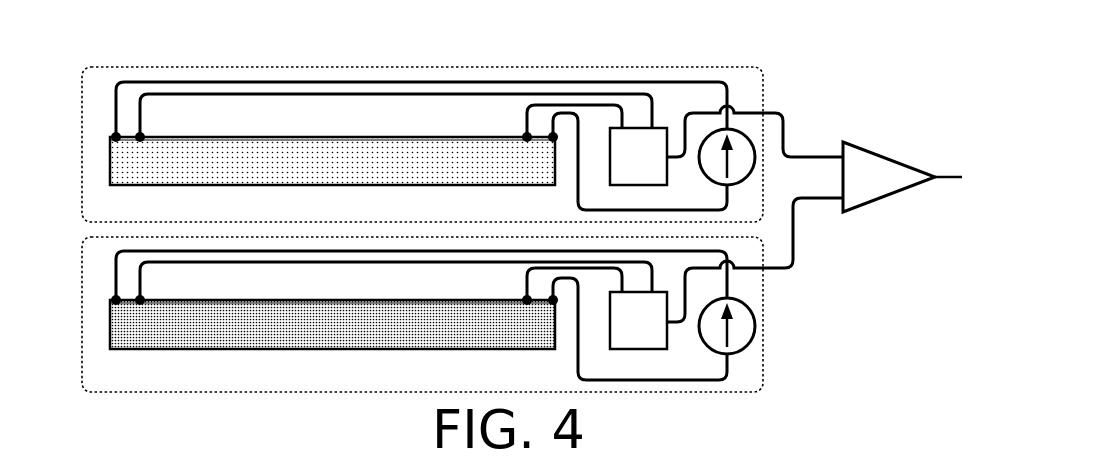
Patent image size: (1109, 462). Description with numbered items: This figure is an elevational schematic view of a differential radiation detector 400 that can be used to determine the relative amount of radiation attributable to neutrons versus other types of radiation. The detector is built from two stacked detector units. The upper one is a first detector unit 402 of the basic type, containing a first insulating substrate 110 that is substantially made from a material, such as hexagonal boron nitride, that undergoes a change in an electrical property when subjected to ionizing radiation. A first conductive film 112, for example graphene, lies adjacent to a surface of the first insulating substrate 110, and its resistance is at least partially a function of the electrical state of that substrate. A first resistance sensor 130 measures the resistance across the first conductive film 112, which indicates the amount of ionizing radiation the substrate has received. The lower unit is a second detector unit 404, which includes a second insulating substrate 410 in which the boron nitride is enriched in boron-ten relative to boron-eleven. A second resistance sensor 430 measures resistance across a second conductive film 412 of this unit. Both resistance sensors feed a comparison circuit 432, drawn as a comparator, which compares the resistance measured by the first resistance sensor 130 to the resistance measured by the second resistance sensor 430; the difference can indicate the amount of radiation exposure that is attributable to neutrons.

The differential radiation detector 400 is at (883, 73).
The first detector unit 402 is at (765, 85).
The second detector unit 404 is at (765, 307).
The first insulating substrate 110 is at (301, 155).
The first conductive film 112 is at (380, 136).
The first resistance sensor 130 is at (632, 185).
The second insulating substrate 410 is at (301, 325).
The second conductive film 412 is at (392, 300).
The second resistance sensor 430 is at (632, 349).
The comparison circuit 432 is at (866, 152).